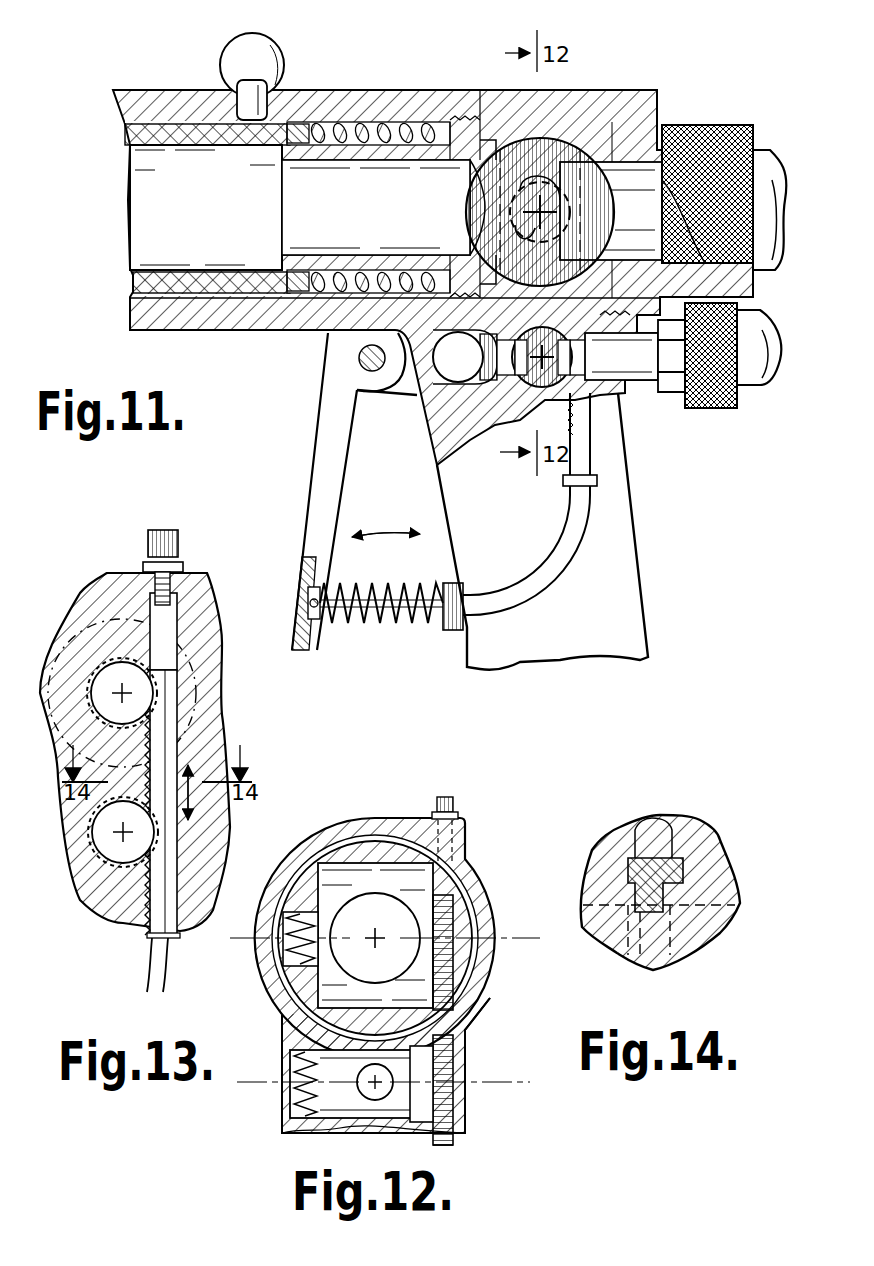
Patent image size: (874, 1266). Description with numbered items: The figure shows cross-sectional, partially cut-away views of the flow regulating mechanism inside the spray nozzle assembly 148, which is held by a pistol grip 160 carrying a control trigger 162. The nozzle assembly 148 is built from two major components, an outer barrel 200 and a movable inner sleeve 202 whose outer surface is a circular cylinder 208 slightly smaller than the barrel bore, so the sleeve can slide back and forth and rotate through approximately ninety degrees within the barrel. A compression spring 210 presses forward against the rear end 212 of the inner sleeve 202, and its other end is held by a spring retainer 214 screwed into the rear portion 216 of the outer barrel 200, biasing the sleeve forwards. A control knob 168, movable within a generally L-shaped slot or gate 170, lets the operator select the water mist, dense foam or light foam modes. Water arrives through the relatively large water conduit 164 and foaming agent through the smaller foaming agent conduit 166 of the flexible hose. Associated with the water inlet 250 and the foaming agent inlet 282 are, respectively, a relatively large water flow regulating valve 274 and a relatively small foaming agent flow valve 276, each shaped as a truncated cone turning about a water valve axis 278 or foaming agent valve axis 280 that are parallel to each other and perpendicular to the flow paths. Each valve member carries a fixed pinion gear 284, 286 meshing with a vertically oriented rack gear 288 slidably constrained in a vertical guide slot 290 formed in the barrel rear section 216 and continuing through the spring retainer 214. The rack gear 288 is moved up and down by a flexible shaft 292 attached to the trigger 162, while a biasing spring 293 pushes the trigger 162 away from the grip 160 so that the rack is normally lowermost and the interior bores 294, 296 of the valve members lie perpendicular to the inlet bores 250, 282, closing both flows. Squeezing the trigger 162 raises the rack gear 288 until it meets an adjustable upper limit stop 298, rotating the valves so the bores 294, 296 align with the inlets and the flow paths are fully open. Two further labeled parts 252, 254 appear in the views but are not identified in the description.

In FIG. 11, the spray nozzle assembly 148 is at (390, 42).
In FIG. 11, the pistol grip 160 is at (650, 603).
In FIG. 11, the control trigger 162 is at (306, 545).
In FIG. 11, the water conduit 164 is at (766, 165).
In FIG. 11, the foaming agent conduit 166 is at (755, 385).
In FIG. 11, the control knob 168 is at (245, 50).
In FIG. 11, the L-shaped slot 170 is at (265, 100).
In FIG. 11, the outer barrel 200 is at (468, 90).
In FIG. 11, the inner sleeve 202 is at (207, 300).
In FIG. 11, the circular cylinder 208 is at (178, 300).
In FIG. 11, the compression spring 210 is at (340, 130).
In FIG. 11, the rear end 212 is at (300, 323).
In FIG. 11, the spring retainer 214 is at (436, 185).
In FIG. 14, the spring retainer 214 is at (705, 920).
In FIG. 11, the outer barrel rear section 216 is at (405, 100).
In FIG. 11, the water inlet 250 is at (650, 190).
In FIG. 11, the nozzle spool 252 is at (435, 122).
In FIG. 11, the barrel tube 254 is at (160, 160).
In FIG. 11, the water flow regulating valve 274 is at (622, 150).
In FIG. 13, the water flow regulating valve 274 is at (70, 650).
In FIG. 12, the water flow regulating valve 274 is at (412, 870).
In FIG. 11, the foaming agent flow valve 276 is at (598, 408).
In FIG. 13, the foaming agent flow valve 276 is at (128, 890).
In FIG. 12, the foaming agent flow valve 276 is at (437, 1095).
In FIG. 11, the water valve axis 278 is at (530, 195).
In FIG. 12, the water valve axis 278 is at (500, 945).
In FIG. 11, the foaming agent fluid valve axis 280 is at (437, 446).
In FIG. 12, the foaming agent fluid valve axis 280 is at (470, 1100).
In FIG. 11, the foaming agent inlet 282 is at (638, 368).
In FIG. 13, the pinion gear 284 is at (110, 650).
In FIG. 12, the pinion gear 284 is at (456, 922).
In FIG. 13, the pinion gear 286 is at (102, 862).
In FIG. 12, the pinion gear 286 is at (456, 1068).
In FIG. 14, the pinion gear 286 is at (696, 950).
In FIG. 11, the rack gear 288 is at (588, 460).
In FIG. 12, the rack gear 288 is at (453, 1140).
In FIG. 14, the rack gear 288 is at (640, 856).
In FIG. 12, the vertical guide slot 290 is at (465, 860).
In FIG. 14, the vertical guide slot 290 is at (668, 825).
In FIG. 11, the flexible shaft 292 is at (388, 620).
In FIG. 11, the biasing spring 293 is at (318, 628).
In FIG. 11, the interior bore 294 is at (590, 150).
In FIG. 12, the interior bore 294 is at (358, 905).
In FIG. 11, the interior bore 296 is at (455, 440).
In FIG. 12, the interior bore 296 is at (320, 1120).
In FIG. 13, the adjustable upper limit stop 298 is at (180, 590).